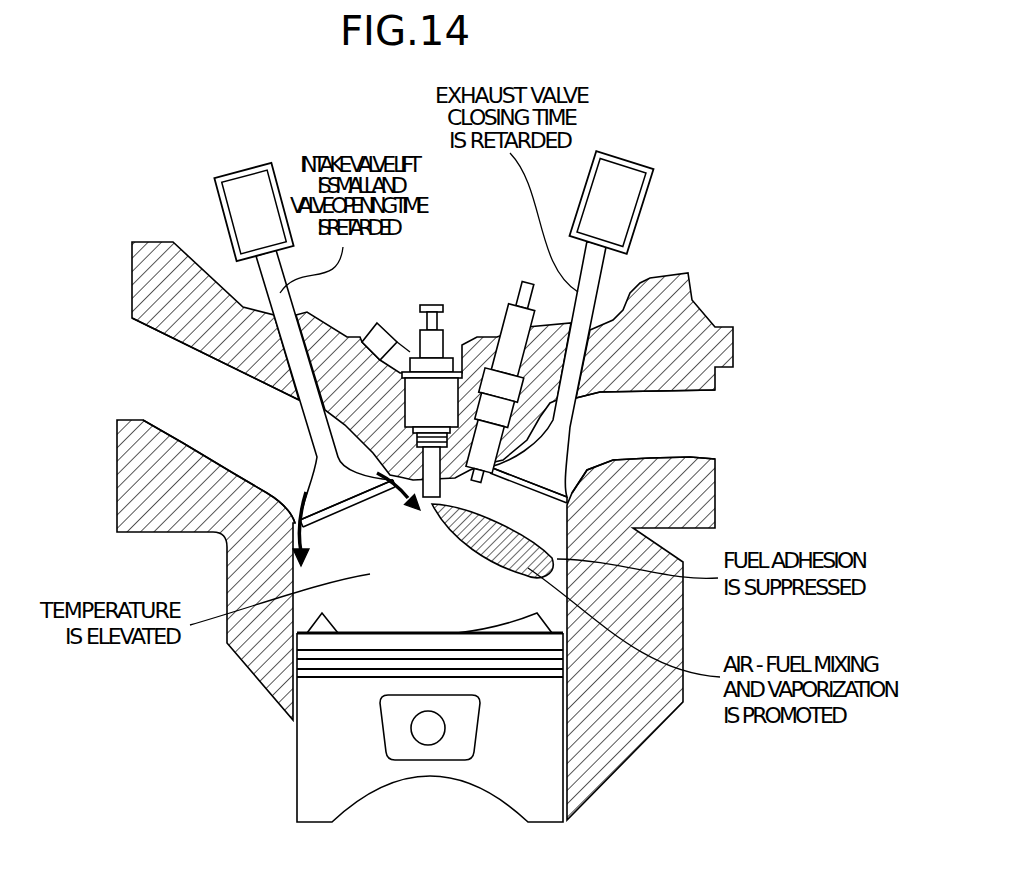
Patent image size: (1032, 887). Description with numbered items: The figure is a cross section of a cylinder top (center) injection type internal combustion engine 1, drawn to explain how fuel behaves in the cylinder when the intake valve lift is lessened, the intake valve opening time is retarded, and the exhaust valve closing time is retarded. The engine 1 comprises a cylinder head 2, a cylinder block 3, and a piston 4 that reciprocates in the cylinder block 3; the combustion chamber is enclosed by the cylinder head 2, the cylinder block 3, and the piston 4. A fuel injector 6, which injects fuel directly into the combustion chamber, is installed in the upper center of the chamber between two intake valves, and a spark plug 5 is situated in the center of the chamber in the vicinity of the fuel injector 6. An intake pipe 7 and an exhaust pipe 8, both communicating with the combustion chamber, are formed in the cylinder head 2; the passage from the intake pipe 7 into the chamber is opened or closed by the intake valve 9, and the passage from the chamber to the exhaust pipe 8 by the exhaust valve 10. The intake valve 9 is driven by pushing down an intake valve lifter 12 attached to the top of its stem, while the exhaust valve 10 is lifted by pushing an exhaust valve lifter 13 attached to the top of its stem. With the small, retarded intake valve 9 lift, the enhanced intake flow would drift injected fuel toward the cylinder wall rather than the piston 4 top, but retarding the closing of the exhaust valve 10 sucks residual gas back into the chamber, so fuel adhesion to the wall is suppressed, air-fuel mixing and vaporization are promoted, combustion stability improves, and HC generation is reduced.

The cylinder injection type internal combustion engine 1 is at (218, 692).
The cylinder head 2 is at (700, 467).
The cylinder block 3 is at (670, 625).
The piston 4 is at (430, 772).
The spark plug 5 is at (504, 315).
The fuel injector 6 is at (418, 353).
The intake pipe 7 is at (178, 395).
The exhaust pipe 8 is at (673, 433).
The intake valve 9 is at (323, 448).
The exhaust valve 10 is at (543, 463).
The intake valve lifter 12 is at (217, 200).
The exhaust valve lifter 13 is at (643, 208).